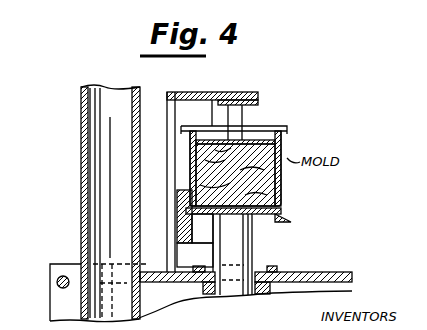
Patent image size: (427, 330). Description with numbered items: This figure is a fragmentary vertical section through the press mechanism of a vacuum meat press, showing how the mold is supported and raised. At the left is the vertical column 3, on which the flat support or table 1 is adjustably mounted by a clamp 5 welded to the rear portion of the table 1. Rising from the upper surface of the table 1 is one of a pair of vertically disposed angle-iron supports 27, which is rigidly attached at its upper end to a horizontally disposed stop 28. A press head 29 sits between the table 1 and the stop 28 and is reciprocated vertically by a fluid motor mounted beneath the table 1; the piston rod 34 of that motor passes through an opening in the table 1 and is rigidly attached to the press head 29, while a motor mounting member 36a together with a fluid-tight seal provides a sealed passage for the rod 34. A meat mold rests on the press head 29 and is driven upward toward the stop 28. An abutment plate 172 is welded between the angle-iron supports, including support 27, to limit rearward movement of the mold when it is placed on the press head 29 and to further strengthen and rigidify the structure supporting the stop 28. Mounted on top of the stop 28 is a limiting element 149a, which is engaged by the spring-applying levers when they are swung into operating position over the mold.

The table 1 is at (333, 270).
The vertical column 3 is at (82, 153).
The clamp 5 is at (50, 268).
The angle-iron support 27 is at (173, 127).
The stop 28 is at (260, 92).
The limiting element 149a is at (212, 91).
The press head 29 is at (285, 218).
The abutment plate 172 is at (178, 234).
The piston rod 34 is at (240, 233).
The motor mounting member 36a is at (271, 290).